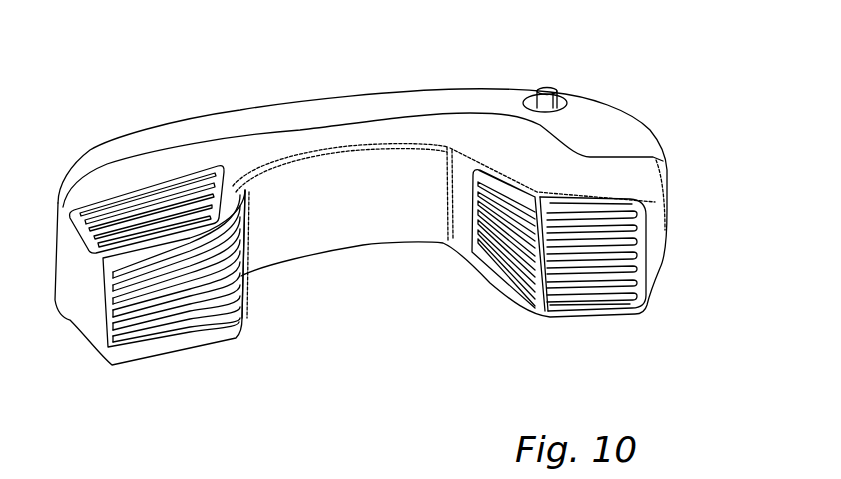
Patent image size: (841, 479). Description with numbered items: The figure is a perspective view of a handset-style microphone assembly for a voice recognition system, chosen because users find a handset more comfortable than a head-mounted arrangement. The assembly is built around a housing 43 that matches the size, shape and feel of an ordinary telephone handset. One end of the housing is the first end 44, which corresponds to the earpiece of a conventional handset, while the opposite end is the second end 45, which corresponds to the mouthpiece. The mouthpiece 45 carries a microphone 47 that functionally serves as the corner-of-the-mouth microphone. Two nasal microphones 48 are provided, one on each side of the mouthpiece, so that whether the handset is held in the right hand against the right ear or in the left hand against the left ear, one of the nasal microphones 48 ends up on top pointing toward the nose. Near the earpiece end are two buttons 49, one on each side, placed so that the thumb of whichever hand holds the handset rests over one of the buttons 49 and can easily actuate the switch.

The housing 43 is at (267, 107).
The first end 44 is at (666, 272).
The second end 45 is at (239, 312).
The microphone 47 is at (171, 301).
The nasal microphones 48 is at (118, 216).
The buttons 49 is at (549, 93).